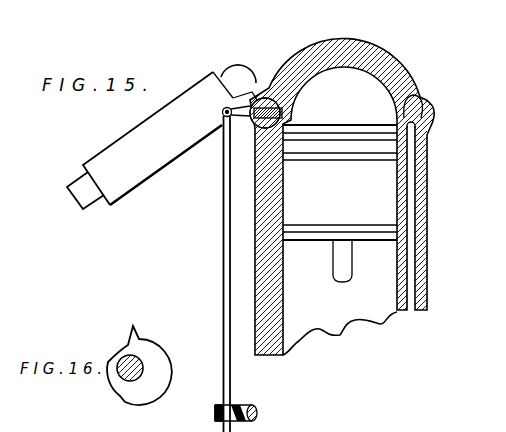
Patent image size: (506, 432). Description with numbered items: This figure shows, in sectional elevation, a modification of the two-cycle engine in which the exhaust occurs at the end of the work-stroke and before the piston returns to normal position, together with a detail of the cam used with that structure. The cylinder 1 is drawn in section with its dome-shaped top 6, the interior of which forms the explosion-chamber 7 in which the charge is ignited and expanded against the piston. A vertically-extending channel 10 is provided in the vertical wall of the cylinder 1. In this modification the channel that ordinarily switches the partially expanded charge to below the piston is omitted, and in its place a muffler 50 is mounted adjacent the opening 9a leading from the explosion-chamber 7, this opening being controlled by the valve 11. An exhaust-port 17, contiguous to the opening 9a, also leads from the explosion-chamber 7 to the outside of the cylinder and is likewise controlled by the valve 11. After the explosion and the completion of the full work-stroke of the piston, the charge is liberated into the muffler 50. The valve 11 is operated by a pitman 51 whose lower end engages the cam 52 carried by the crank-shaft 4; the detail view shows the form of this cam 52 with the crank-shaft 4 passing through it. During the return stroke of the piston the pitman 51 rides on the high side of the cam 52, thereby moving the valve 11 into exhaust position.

In FIG. 15, the cylinder 1 is at (258, 283).
In FIG. 15, the crank-shaft 4 is at (250, 404).
In FIG. 16, the crank-shaft 4 is at (120, 377).
In FIG. 15, the dome-shaped top 6 is at (387, 62).
In FIG. 15, the explosion-chamber 7 is at (340, 186).
In FIG. 15, the opening 9a is at (287, 107).
In FIG. 15, the vertically-extending channel 10 is at (410, 213).
In FIG. 15, the valve 11 is at (251, 136).
In FIG. 15, the exhaust-port 17 is at (262, 88).
In FIG. 15, the muffler 50 is at (148, 173).
In FIG. 15, the pitman 51 is at (222, 203).
In FIG. 15, the cam 52 is at (223, 395).
In FIG. 16, the cam 52 is at (155, 378).